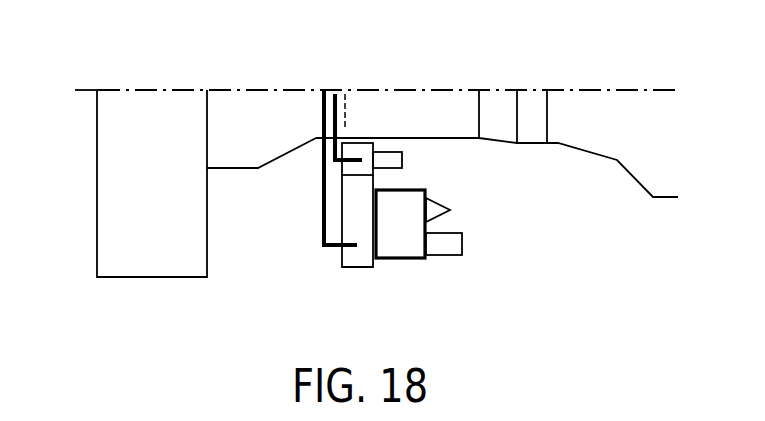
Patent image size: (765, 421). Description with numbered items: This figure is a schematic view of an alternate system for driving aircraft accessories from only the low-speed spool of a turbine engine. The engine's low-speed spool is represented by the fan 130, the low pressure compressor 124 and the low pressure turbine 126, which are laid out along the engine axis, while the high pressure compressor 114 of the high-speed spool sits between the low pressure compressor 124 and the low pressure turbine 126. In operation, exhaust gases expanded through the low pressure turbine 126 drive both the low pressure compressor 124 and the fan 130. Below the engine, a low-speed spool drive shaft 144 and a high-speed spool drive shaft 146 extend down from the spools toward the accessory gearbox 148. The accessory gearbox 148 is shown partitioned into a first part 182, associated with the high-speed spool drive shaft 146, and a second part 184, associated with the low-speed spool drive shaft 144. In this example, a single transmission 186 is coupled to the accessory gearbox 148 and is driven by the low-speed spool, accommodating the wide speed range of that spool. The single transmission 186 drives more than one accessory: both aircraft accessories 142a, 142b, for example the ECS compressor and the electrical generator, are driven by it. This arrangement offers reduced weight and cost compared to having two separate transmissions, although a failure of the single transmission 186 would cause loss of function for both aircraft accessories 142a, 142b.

The high pressure compressor 114 is at (425, 128).
The low pressure compressor 124 is at (263, 132).
The low pressure turbine 126 is at (657, 141).
The fan 130 is at (113, 153).
The aircraft accessory 142a is at (447, 248).
The aircraft accessory 142b is at (437, 202).
The low-speed spool drive shaft 144 is at (318, 107).
The high-speed spool drive shaft 146 is at (340, 103).
The accessory gearbox 148 is at (352, 268).
The first part 182 is at (345, 170).
The second part 184 is at (348, 253).
The transmission 186 is at (403, 260).